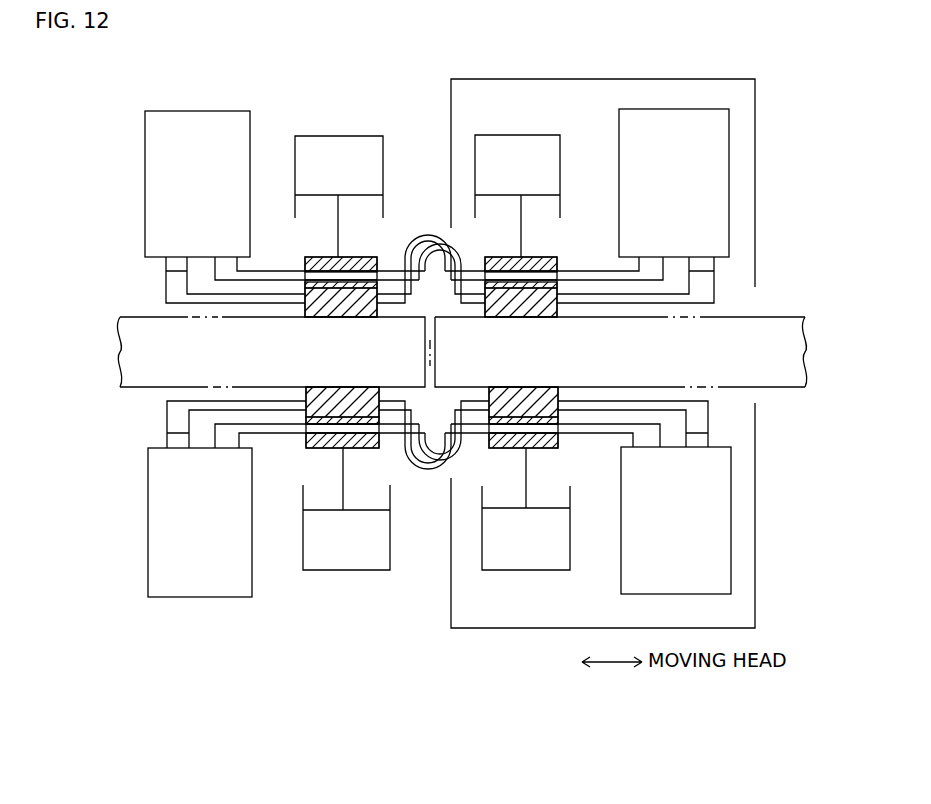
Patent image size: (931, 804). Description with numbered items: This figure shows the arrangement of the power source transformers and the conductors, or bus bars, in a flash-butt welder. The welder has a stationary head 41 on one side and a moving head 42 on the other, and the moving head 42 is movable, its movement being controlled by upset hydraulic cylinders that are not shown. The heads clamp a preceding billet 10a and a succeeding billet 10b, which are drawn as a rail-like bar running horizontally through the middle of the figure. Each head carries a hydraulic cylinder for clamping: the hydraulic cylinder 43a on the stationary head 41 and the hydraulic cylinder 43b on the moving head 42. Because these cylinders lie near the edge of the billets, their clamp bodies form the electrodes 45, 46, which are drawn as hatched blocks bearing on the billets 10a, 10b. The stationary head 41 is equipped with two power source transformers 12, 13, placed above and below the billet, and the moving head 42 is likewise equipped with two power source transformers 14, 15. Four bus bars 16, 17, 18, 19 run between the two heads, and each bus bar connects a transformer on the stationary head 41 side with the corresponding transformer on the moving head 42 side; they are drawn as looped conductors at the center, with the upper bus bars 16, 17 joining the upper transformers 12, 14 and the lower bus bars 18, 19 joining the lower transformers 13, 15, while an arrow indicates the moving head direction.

The preceding billet 10a is at (135, 320).
The succeeding billet 10b is at (767, 320).
The power source transformer 12 is at (145, 207).
The power source transformer 13 is at (149, 538).
The power source transformer 14 is at (729, 220).
The power source transformer 15 is at (731, 560).
The bus bar 16 is at (403, 252).
The bus bar 17 is at (433, 238).
The bus bar 18 is at (405, 470).
The bus bar 19 is at (440, 475).
The stationary head 41 is at (285, 113).
The moving head 42 is at (755, 157).
The hydraulic cylinder 43a is at (355, 145).
The hydraulic cylinder 43b is at (550, 136).
The electrode 45 is at (356, 258).
The electrode 46 is at (540, 263).